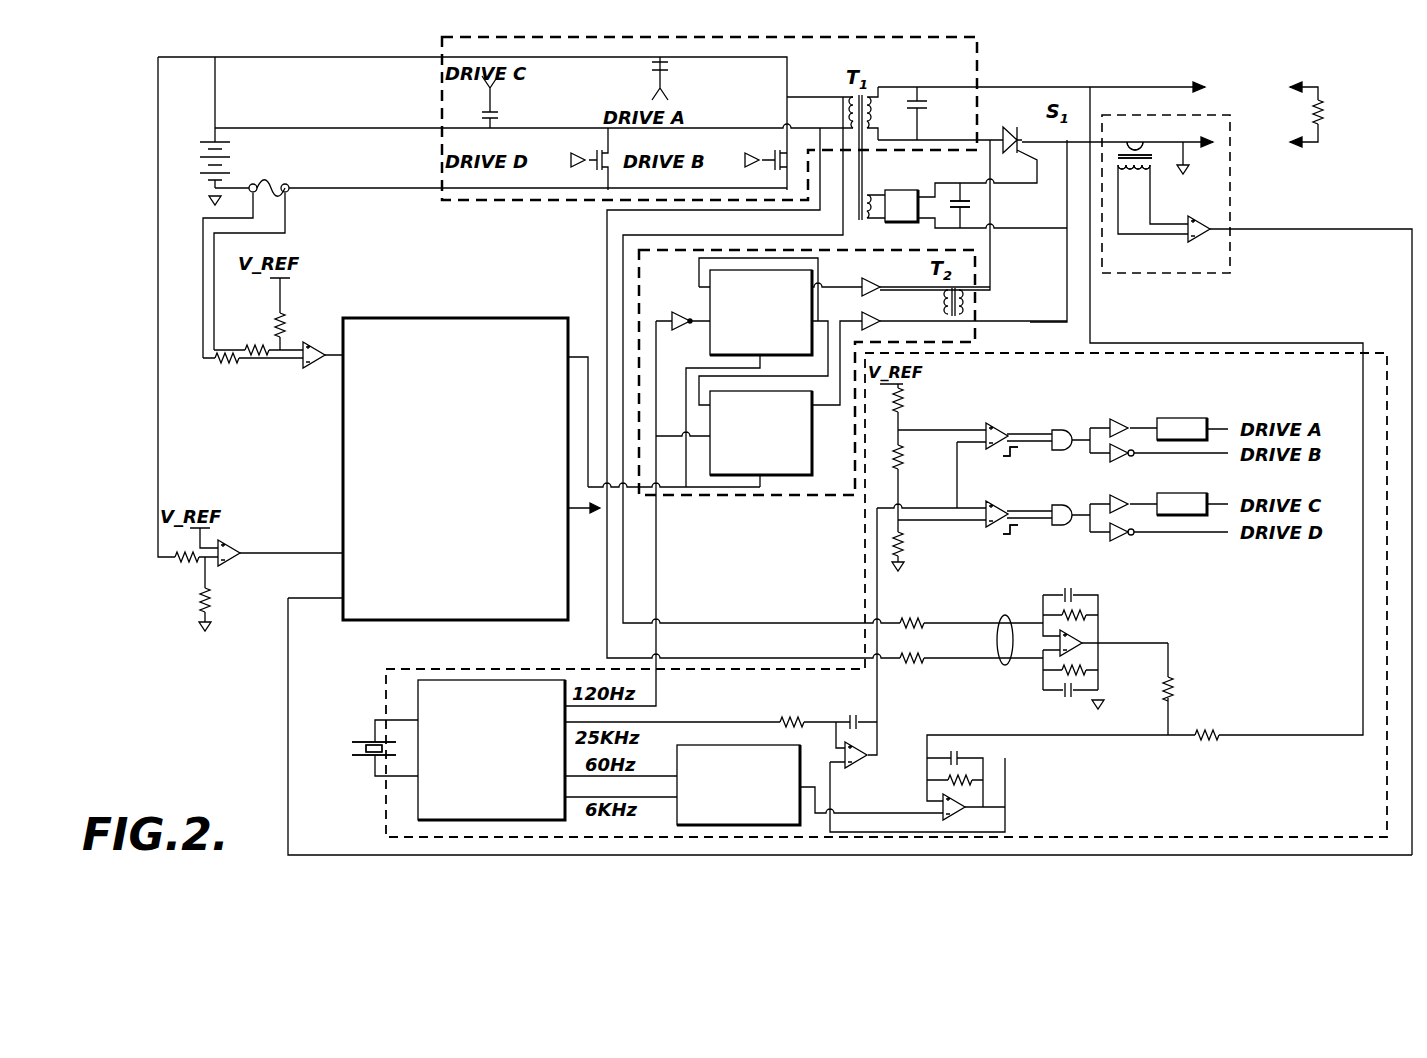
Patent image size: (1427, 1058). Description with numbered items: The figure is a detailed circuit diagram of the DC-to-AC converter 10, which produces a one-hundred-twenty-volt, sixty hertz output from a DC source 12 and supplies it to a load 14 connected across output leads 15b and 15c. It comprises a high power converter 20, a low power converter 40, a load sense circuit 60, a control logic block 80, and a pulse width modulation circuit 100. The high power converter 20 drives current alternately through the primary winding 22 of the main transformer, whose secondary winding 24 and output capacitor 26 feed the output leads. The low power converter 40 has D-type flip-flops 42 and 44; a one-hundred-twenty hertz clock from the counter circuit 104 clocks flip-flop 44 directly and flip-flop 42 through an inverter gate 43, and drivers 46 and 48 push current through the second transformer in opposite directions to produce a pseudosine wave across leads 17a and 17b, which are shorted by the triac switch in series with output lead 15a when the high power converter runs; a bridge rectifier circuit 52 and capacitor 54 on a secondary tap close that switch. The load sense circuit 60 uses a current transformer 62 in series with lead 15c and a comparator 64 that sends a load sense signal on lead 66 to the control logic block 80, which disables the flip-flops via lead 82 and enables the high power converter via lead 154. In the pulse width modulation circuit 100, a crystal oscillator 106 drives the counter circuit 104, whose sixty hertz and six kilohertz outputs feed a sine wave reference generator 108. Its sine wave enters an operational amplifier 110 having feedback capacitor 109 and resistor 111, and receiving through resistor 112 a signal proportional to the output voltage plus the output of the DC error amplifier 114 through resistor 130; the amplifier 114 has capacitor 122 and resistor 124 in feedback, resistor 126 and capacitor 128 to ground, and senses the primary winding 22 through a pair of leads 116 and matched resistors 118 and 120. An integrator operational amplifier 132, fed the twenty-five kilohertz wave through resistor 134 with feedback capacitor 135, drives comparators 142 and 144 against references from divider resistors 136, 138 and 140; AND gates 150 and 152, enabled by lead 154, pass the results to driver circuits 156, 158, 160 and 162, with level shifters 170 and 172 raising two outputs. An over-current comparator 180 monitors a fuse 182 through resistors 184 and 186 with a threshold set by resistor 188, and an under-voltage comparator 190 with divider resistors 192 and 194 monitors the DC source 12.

The DC-to-AC converter 10 is at (192, 683).
The DC source 12 is at (232, 162).
The load 14 is at (1320, 132).
The output lead 15a is at (960, 140).
The output lead 15b is at (1128, 87).
The output lead 15c is at (1195, 142).
The lead 17a is at (990, 290).
The lead 17b is at (1068, 297).
The high power converter 20 is at (440, 42).
The primary winding 22 is at (829, 128).
The transformer secondary winding 24 is at (883, 128).
The output capacitor 26 is at (921, 104).
The low power converter 40 is at (700, 497).
The D-type flip-flop 42 is at (814, 280).
The inverter gate 43 is at (678, 312).
The D-type flip-flop 44 is at (790, 478).
The driver circuit 46 is at (880, 287).
The driver 48 is at (882, 321).
The bridge rectifier circuit 52 is at (903, 190).
The capacitor 54 is at (978, 208).
The load sense circuit 60 is at (1232, 212).
The current transformer 62 is at (1155, 198).
The comparator 64 is at (1195, 236).
The lead 66 is at (1412, 276).
The control logic block 80 is at (455, 318).
The lead 82 is at (588, 357).
The pulse width modulation circuit 100 is at (1300, 352).
The counter circuit 104 is at (418, 797).
The crystal oscillator 106 is at (378, 721).
The sine wave reference generator 108 is at (710, 745).
The capacitor 109 is at (960, 758).
The operational amplifier 110 is at (965, 810).
The resistor 111 is at (962, 781).
The resistor 112 is at (1210, 738).
The operational amplifier 114 is at (1082, 640).
The pair of leads 116 is at (1002, 662).
The matched resistor 118 is at (895, 620).
The matched resistor 120 is at (906, 660).
The capacitor 122 is at (1070, 592).
The resistor 124 is at (1065, 614).
The resistor 126 is at (1076, 669).
The capacitor 128 is at (1065, 692).
The resistor 130 is at (1170, 680).
The operational amplifier 132 is at (862, 762).
The resistor 134 is at (792, 722).
The capacitor 135 is at (853, 720).
The resistor 136 is at (904, 400).
The resistor 138 is at (903, 458).
The resistor 140 is at (897, 544).
The comparator 142 is at (992, 430).
The comparator 144 is at (988, 522).
The AND gate 150 is at (1055, 428).
The AND gate 152 is at (1056, 504).
The lead 154 is at (1015, 447).
The driver circuit 156 is at (1118, 428).
The driver circuit 158 is at (1125, 452).
The driver circuit 160 is at (1118, 504).
The driver circuit 162 is at (1126, 534).
The level shifter 170 is at (1185, 418).
The level shifter 172 is at (1208, 500).
The over-current comparator 180 is at (310, 368).
The fuse 182 is at (289, 192).
The resistor 184 is at (228, 360).
The resistor 186 is at (256, 348).
The resistor 188 is at (282, 318).
The under-voltage comparator 190 is at (238, 548).
The resistor 192 is at (180, 562).
The resistor 194 is at (200, 610).